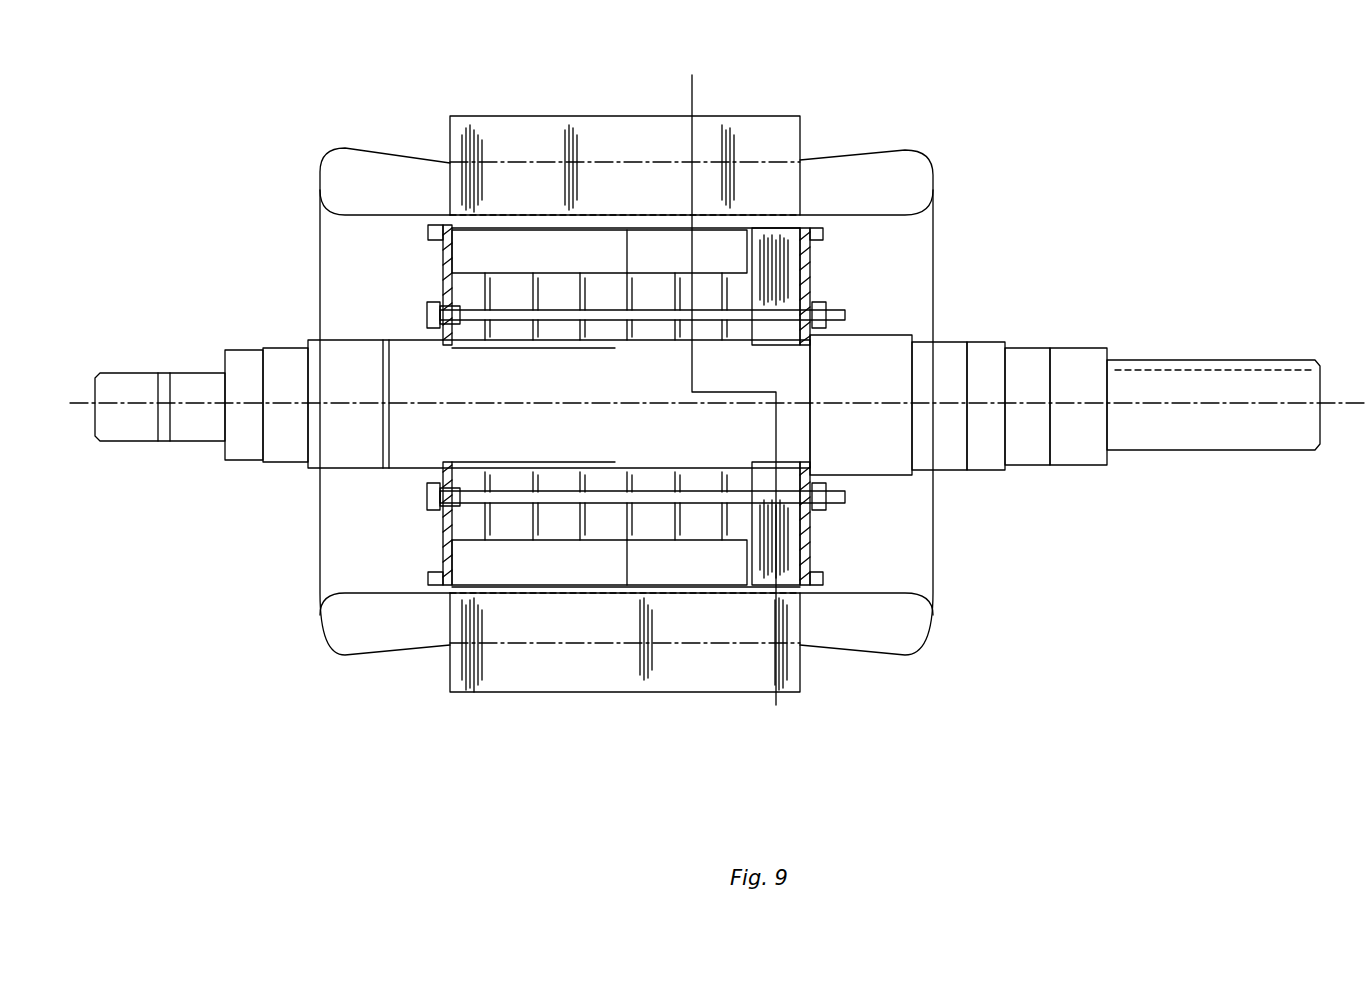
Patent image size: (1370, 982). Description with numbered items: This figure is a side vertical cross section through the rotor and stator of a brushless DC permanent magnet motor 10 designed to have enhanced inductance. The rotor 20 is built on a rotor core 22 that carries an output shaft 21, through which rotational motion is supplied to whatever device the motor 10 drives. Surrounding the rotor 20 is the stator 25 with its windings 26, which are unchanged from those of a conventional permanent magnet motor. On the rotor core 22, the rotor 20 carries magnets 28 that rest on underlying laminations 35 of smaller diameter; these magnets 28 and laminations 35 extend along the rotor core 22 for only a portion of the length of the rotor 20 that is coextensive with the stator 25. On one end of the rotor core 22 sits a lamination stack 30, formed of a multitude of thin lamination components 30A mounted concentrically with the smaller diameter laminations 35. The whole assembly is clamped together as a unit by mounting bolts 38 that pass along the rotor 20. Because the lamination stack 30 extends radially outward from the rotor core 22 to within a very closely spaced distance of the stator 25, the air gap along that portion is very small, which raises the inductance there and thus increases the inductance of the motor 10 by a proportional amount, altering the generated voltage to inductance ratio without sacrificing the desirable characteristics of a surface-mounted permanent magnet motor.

The permanent magnet motor 10 is at (262, 154).
The rotor 20 is at (318, 332).
The output shaft 21 is at (140, 432).
The rotor core 22 is at (872, 374).
The stator 25 is at (370, 150).
The windings 26 is at (475, 140).
The magnets 28 is at (594, 240).
The lamination stack 30 is at (809, 204).
The lamination components 30A is at (770, 268).
The laminations 35 is at (462, 528).
The mounting bolts 38 is at (425, 318).